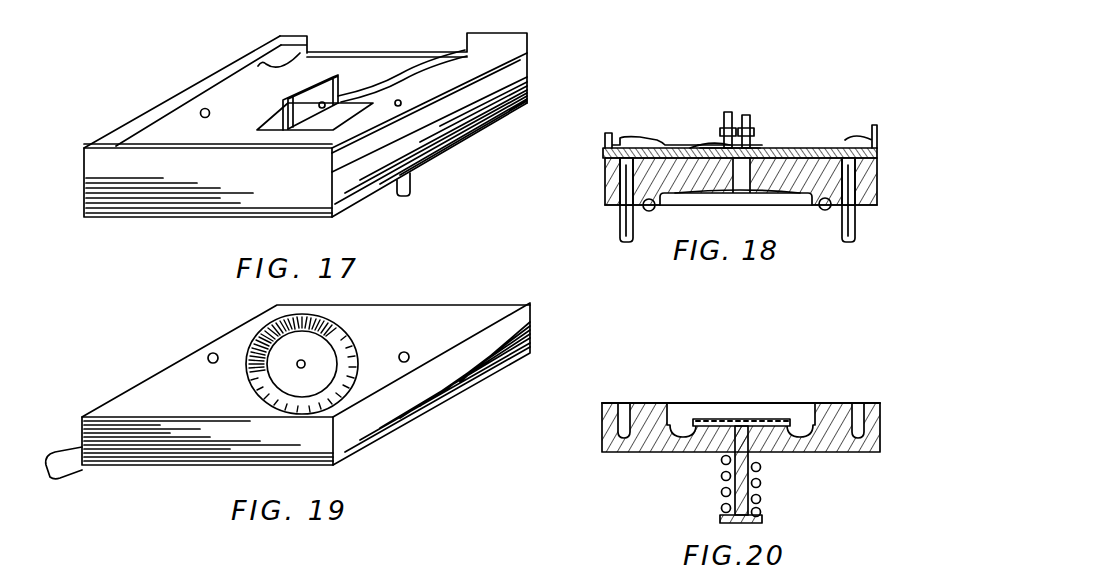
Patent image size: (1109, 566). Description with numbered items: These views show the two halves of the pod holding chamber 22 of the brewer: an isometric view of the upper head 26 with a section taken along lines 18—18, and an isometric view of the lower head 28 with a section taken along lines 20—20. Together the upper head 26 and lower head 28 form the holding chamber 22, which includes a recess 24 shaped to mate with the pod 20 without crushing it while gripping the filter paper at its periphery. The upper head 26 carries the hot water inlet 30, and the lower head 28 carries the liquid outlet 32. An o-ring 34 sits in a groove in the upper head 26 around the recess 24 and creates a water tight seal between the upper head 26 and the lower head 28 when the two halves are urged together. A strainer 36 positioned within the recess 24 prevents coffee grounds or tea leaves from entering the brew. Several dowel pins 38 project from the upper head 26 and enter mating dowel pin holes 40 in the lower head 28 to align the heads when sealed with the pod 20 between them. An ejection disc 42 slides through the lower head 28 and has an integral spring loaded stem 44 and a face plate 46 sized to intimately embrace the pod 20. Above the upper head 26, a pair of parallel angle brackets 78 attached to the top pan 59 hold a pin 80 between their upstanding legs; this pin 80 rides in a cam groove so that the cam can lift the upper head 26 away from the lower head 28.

In FIG. 17, the section lines 18— 18 is at (58, 115).
In FIG. 18, the section lines 18— 18 is at (548, 110).
In FIG. 19, the pod 20 is at (63, 362).
In FIG. 20, the pod 20 is at (540, 358).
In FIG. 17, the pod holding chamber 22 is at (237, 66).
In FIG. 18, the pod holding chamber 22 is at (822, 129).
In FIG. 19, the pod holding chamber 22 is at (100, 390).
In FIG. 20, the pod holding chamber 22 is at (827, 378).
In FIG. 18, the recess 24 is at (678, 198).
In FIG. 19, the recess 24 is at (353, 333).
In FIG. 20, the recess 24 is at (723, 423).
In FIG. 17, the upper head 26 is at (450, 148).
In FIG. 18, the upper head 26 is at (874, 133).
In FIG. 19, the lower head 28 is at (380, 437).
In FIG. 20, the lower head 28 is at (603, 430).
In FIG. 18, the hot water inlet 30 is at (726, 148).
In FIG. 19, the liquid outlet 32 is at (62, 478).
In FIG. 18, the o-ring 34 is at (647, 212).
In FIG. 19, the strainer 36 is at (373, 560).
In FIG. 20, the strainer 36 is at (667, 452).
In FIG. 17, the dowel pins 38 is at (398, 197).
In FIG. 18, the dowel pins 38 is at (620, 212).
In FIG. 19, the dowel pin holes 40 is at (211, 354).
In FIG. 20, the dowel pin holes 40 is at (622, 403).
In FIG. 20, the ejection disc 42 is at (767, 477).
In FIG. 20, the spring loaded stem 44 is at (723, 477).
In FIG. 20, the face plate 46 is at (739, 425).
In FIG. 17, the top pan 59 is at (320, 42).
In FIG. 18, the top pan 59 is at (605, 143).
In FIG. 17, the angle brackets 78 is at (398, 48).
In FIG. 18, the angle brackets 78 is at (728, 118).
In FIG. 17, the pin 80 is at (385, 80).
In FIG. 18, the pin 80 is at (750, 128).